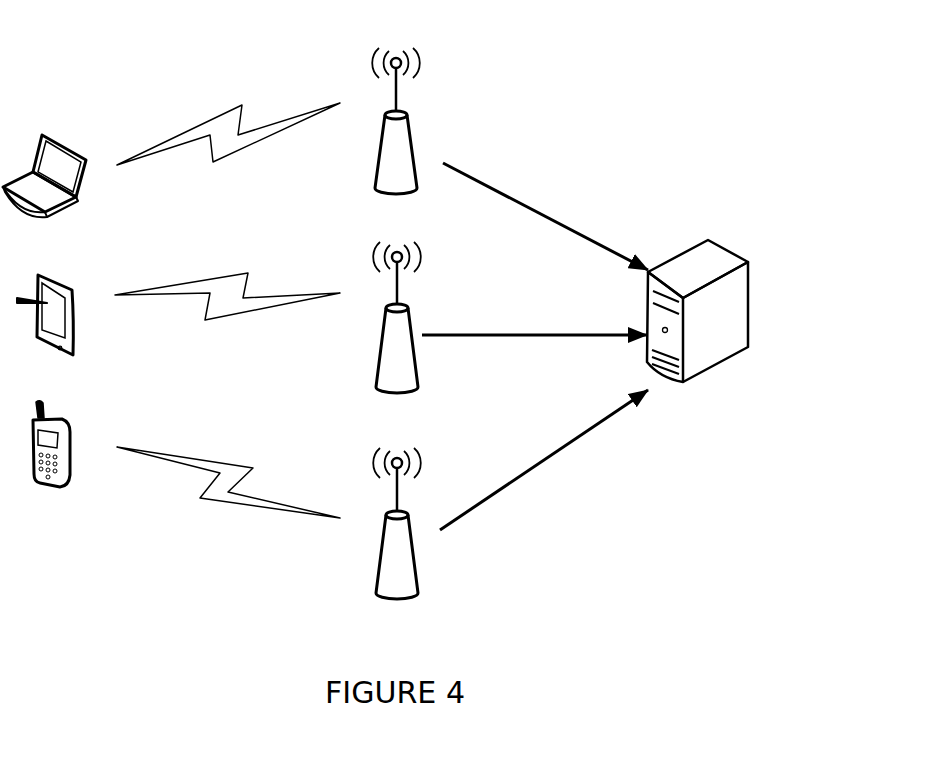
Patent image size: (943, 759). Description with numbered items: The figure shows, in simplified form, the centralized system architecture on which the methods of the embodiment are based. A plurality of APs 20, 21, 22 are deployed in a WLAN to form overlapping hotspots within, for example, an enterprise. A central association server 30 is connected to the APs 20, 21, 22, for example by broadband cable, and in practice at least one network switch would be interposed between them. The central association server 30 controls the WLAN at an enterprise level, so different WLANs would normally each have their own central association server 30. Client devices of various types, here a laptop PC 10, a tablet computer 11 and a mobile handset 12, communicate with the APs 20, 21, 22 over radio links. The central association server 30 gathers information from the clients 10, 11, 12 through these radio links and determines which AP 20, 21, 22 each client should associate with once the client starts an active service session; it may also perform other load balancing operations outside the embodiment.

The laptop PC 10 is at (48, 155).
The tablet computer 11 is at (58, 294).
The mobile handset 12 is at (61, 424).
The AP 20 is at (389, 108).
The AP 21 is at (389, 302).
The AP 22 is at (392, 510).
The central association server 30 is at (721, 291).